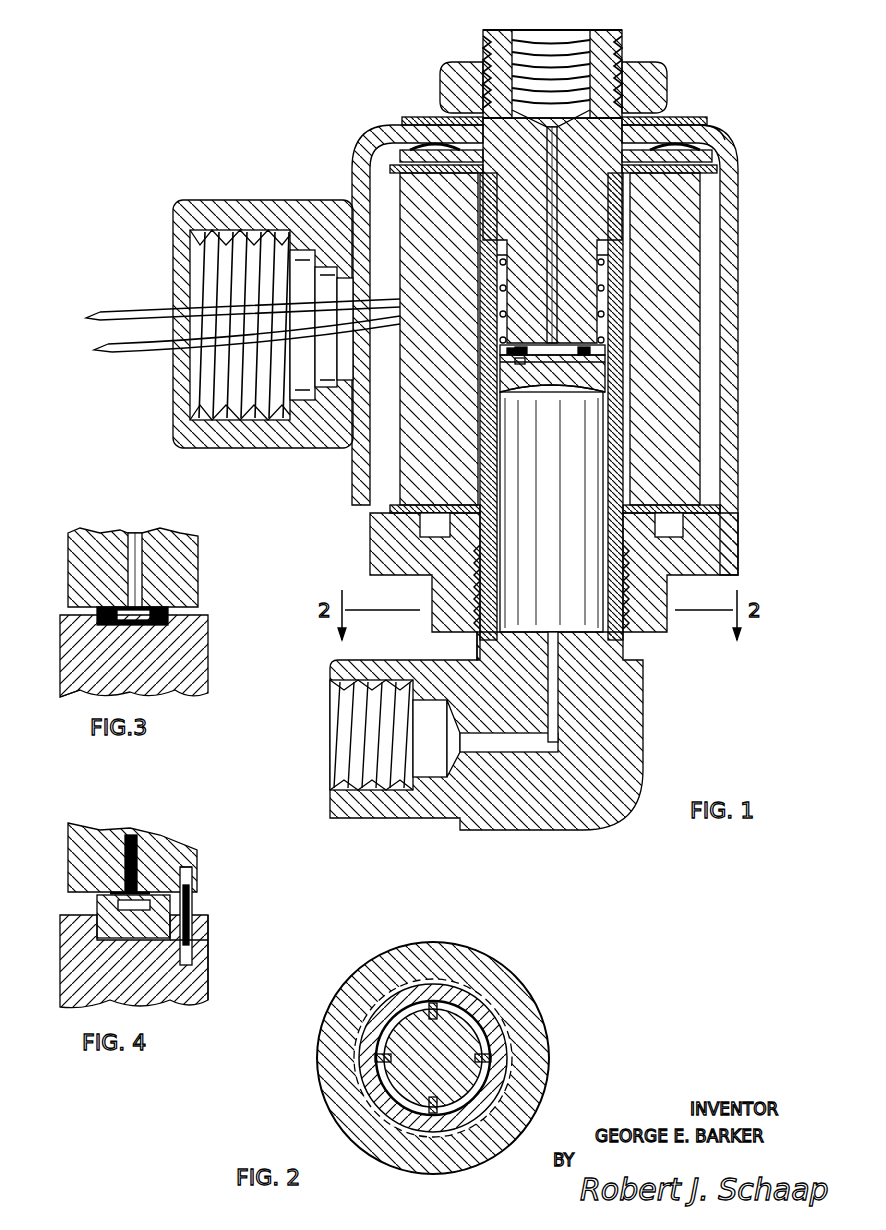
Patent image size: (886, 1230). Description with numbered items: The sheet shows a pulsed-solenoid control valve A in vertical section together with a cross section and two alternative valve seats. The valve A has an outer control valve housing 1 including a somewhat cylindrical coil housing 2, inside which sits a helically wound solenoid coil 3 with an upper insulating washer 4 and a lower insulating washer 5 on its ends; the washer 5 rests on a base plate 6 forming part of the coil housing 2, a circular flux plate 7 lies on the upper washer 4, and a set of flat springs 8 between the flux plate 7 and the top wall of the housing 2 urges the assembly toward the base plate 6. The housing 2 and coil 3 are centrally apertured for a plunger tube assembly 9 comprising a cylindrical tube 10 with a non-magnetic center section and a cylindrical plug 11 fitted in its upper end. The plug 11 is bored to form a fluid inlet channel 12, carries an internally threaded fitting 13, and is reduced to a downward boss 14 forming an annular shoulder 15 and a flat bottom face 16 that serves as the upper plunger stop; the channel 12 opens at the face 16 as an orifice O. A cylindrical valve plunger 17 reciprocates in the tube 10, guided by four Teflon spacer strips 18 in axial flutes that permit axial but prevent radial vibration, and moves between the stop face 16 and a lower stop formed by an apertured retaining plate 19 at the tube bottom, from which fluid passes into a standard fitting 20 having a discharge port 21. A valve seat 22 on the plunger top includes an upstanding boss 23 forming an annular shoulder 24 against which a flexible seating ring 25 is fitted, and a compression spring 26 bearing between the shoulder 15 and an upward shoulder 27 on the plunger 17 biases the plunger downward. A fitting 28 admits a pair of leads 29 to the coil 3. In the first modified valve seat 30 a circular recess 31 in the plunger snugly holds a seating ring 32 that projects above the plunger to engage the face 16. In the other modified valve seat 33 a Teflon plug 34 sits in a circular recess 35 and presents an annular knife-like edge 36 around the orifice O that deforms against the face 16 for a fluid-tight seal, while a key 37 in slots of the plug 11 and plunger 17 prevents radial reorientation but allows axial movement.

In FIG. 1, the pulsed-solenoid control valve A is at (380, 104).
In FIG. 1, the outer control valve housing 1 is at (374, 136).
In FIG. 1, the coil housing 2 is at (742, 199).
In FIG. 1, the solenoid coil 3 is at (690, 237).
In FIG. 1, the upper insulating washer 4 is at (712, 179).
In FIG. 1, the lower insulating washer 5 is at (722, 509).
In FIG. 1, the base plate 6 is at (736, 556).
In FIG. 2, the base plate 6 is at (532, 1016).
In FIG. 1, the flux plate 7 is at (702, 160).
In FIG. 1, the flat springs 8 is at (722, 132).
In FIG. 1, the plunger tube assembly 9 is at (628, 45).
In FIG. 1, the cylindrical tube 10 is at (626, 452).
In FIG. 2, the cylindrical tube 10 is at (433, 1058).
In FIG. 1, the cylindrical plug 11 is at (498, 42).
In FIG. 1, the fluid inlet channel 12 is at (670, 88).
In FIG. 3, the fluid inlet channel 12 is at (110, 506).
In FIG. 4, the fluid inlet channel 12 is at (134, 836).
In FIG. 1, the fitting 13 is at (566, 30).
In FIG. 1, the boss 14 is at (600, 322).
In FIG. 3, the boss 14 is at (133, 550).
In FIG. 1, the annular shoulder 15 is at (604, 270).
In FIG. 1, the bottom face 16 is at (606, 350).
In FIG. 4, the bottom face 16 is at (194, 898).
In FIG. 1, the valve plunger 17 is at (592, 483).
In FIG. 3, the valve plunger 17 is at (49, 704).
In FIG. 4, the valve plunger 17 is at (206, 992).
In FIG. 2, the valve plunger 17 is at (410, 1035).
In FIG. 2, the spacer strips 18 is at (437, 1006).
In FIG. 1, the retaining plate 19 is at (644, 659).
In FIG. 1, the fitting 20 is at (336, 771).
In FIG. 1, the discharge port 21 is at (470, 748).
In FIG. 1, the valve seat 22 is at (604, 366).
In FIG. 1, the boss 23 is at (575, 383).
In FIG. 1, the annular shoulder 24 is at (596, 376).
In FIG. 1, the seating ring 25 is at (518, 362).
In FIG. 1, the compression spring 26 is at (606, 292).
In FIG. 1, the shoulder 27 is at (592, 354).
In FIG. 1, the fitting 28 is at (276, 200).
In FIG. 1, the leads 29 is at (108, 348).
In FIG. 3, the valve seat 30 is at (206, 694).
In FIG. 3, the circular recess 31 is at (146, 626).
In FIG. 3, the seating ring 32 is at (170, 613).
In FIG. 4, the valve seat 33 is at (210, 946).
In FIG. 4, the Teflon plug 34 is at (98, 906).
In FIG. 4, the circular recess 35 is at (60, 941).
In FIG. 4, the knife-like edge 36 is at (80, 872).
In FIG. 4, the key 37 is at (193, 909).
In FIG. 1, the orifice O is at (512, 352).
In FIG. 4, the orifice O is at (126, 892).